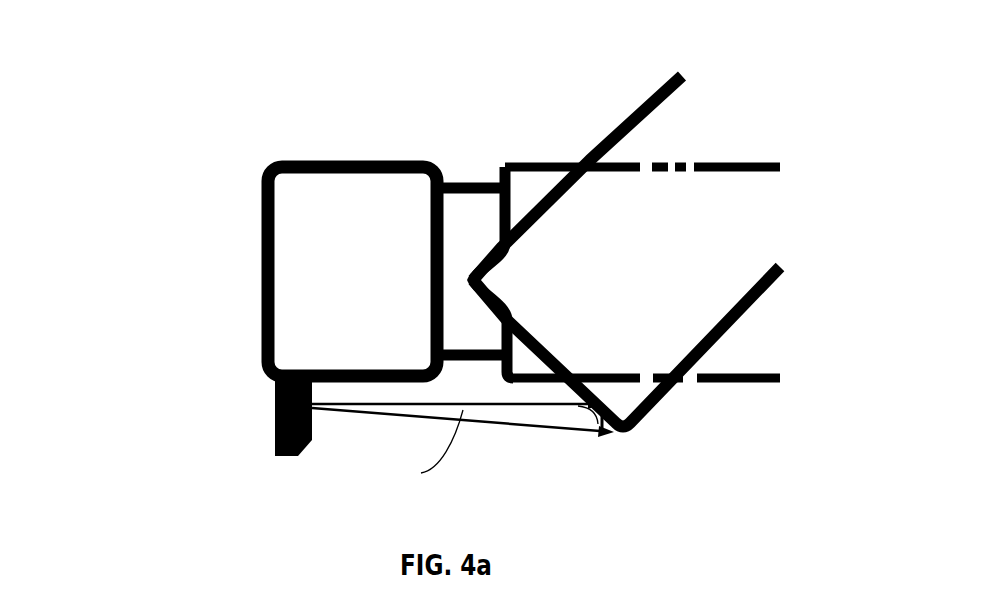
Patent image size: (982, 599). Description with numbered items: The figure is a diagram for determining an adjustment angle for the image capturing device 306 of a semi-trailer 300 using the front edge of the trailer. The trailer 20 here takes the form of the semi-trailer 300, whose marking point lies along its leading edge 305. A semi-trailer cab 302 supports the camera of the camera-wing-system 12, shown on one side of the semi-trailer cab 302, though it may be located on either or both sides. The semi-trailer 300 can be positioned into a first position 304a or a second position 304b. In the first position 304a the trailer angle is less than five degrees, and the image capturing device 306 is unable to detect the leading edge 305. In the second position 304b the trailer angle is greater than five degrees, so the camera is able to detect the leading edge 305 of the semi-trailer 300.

The trailer 20 is at (409, 251).
The semi-trailer 300 is at (176, 210).
The semi-trailer cab 302 is at (315, 178).
The leading edge 305 is at (520, 310).
The first position 304a is at (735, 366).
The second position 304b is at (653, 132).
The camera-wing-system 12 is at (231, 435).
The image capturing device 306 is at (275, 427).